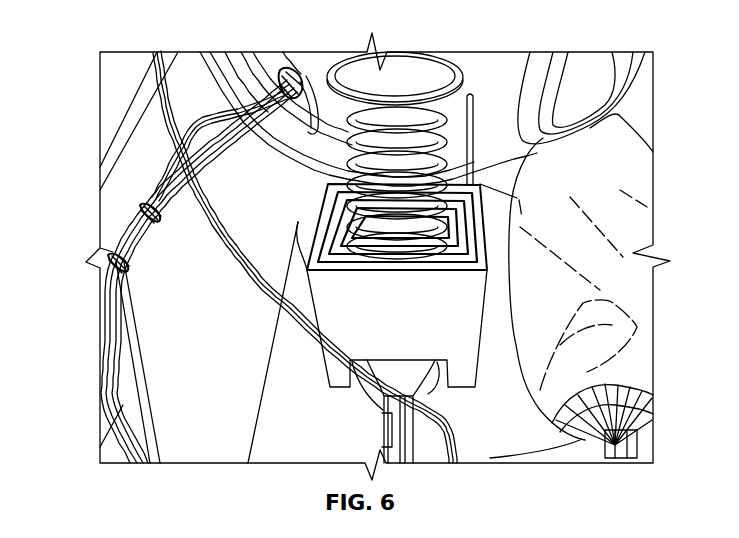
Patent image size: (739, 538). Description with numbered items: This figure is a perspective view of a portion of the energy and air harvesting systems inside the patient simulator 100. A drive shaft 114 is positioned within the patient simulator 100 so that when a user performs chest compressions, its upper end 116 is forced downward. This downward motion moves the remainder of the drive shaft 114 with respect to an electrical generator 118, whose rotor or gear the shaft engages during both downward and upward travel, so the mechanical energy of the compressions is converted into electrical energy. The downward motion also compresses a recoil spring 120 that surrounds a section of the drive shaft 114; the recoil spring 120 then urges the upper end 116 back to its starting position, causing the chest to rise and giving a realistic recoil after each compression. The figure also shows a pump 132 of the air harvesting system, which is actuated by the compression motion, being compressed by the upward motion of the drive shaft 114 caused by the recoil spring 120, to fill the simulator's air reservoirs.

The patient simulator 100 is at (104, 42).
The drive shaft 114 is at (333, 199).
The upper end 116 is at (404, 60).
The electrical generator 118 is at (292, 303).
The recoil spring 120 is at (456, 113).
The pump 132 is at (418, 384).